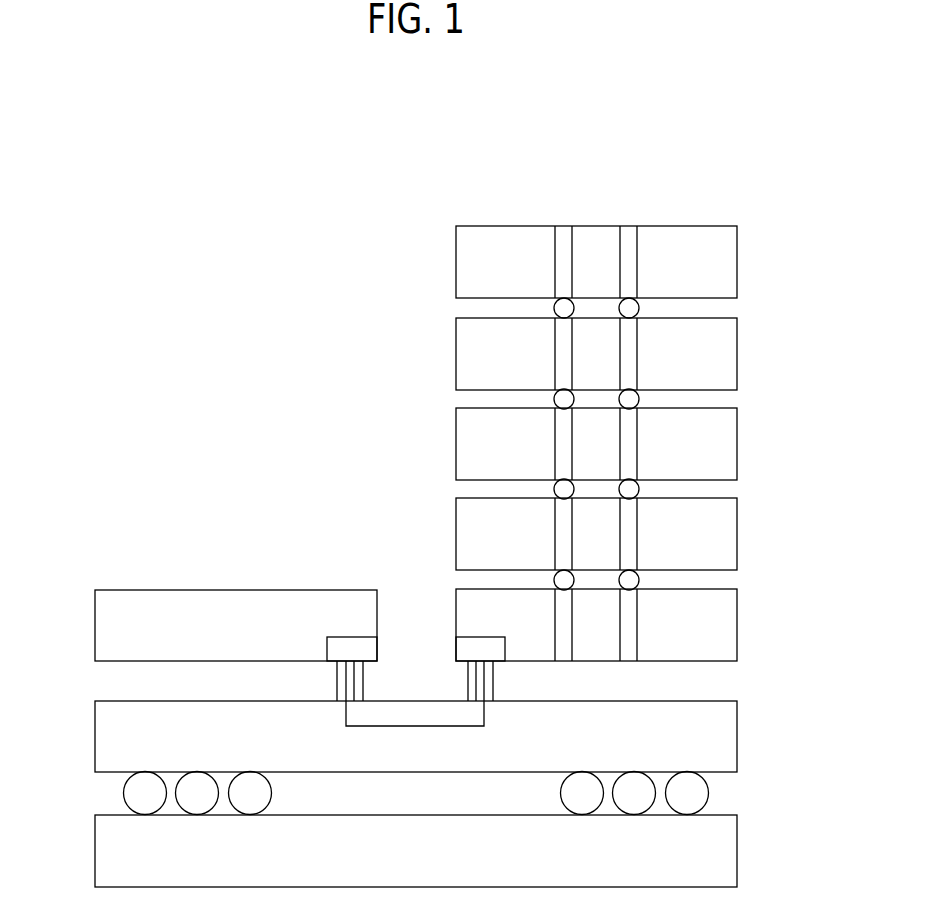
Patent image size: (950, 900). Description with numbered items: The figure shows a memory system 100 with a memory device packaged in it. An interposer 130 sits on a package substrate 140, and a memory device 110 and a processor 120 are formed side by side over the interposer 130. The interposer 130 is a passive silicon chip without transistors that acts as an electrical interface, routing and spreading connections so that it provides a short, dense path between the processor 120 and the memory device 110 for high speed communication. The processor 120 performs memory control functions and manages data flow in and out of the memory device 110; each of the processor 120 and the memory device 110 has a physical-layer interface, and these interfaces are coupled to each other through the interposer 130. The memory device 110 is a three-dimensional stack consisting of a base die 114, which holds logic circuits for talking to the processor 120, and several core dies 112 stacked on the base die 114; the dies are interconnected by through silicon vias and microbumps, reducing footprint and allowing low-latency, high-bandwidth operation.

The memory system 100 is at (848, 190).
The memory device 110 is at (823, 226).
The core dies 112 is at (737, 443).
The base die 114 is at (737, 625).
The processor 120 is at (95, 621).
The interposer 130 is at (737, 736).
The package substrate 140 is at (737, 850).